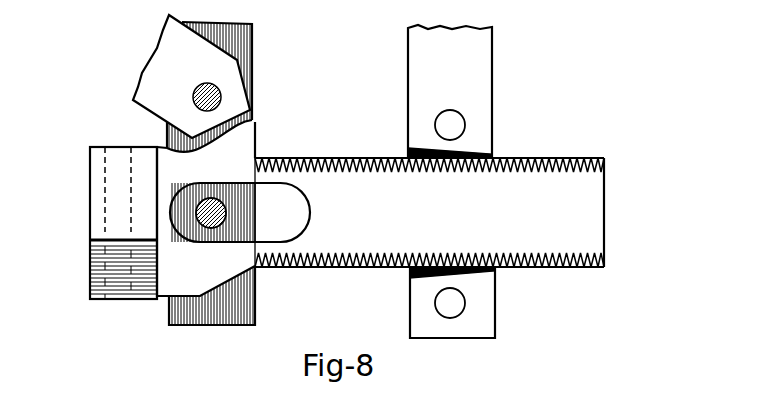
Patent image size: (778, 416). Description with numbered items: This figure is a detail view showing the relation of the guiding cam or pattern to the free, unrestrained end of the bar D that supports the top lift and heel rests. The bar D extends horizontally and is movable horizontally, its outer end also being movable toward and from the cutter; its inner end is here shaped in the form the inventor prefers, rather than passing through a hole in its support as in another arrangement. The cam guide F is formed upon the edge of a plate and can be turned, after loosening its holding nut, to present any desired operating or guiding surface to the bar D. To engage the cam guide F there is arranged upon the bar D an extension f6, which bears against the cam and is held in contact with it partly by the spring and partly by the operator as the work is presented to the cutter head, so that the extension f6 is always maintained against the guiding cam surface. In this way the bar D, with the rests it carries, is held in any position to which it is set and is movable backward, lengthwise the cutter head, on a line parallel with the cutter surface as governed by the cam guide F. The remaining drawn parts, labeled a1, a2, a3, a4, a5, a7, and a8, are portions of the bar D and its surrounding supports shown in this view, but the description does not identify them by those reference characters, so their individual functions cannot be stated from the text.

The upper clamping block a' a1 is at (478, 85).
The upper hatched jaw block a2 is at (243, 75).
The lower clamping block a3 is at (452, 302).
The lower hatched jaw block a4 is at (240, 312).
The pin in slot a5 is at (203, 232).
The slot a7 is at (300, 227).
The end block a8 is at (102, 200).
The extension f6 is at (209, 135).
The cam guide F is at (191, 76).
The bar D is at (350, 210).